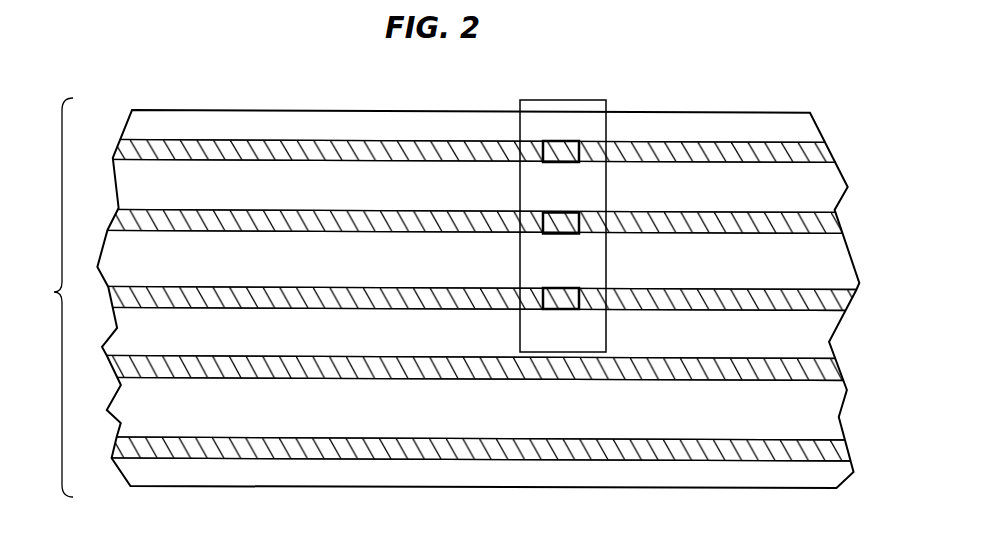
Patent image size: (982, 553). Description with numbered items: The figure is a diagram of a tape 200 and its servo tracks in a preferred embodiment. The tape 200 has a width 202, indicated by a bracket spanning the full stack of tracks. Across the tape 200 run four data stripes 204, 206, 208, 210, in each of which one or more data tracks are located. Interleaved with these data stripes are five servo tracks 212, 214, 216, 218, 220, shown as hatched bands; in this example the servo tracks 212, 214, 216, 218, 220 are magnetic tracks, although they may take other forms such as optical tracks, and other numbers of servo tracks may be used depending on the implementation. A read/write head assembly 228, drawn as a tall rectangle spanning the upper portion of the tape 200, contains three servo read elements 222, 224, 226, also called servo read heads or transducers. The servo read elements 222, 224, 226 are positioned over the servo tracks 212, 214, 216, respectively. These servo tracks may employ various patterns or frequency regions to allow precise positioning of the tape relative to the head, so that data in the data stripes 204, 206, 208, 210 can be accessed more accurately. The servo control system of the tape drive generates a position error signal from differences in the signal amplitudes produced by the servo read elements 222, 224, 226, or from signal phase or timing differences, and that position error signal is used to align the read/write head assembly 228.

The tape 200 is at (265, 88).
The width 202 is at (40, 297).
The data stripe 204 is at (309, 192).
The data stripe 206 is at (309, 267).
The data stripe 208 is at (309, 341).
The data stripe 210 is at (309, 416).
The servo track 212 is at (130, 152).
The servo track 214 is at (128, 223).
The servo track 216 is at (123, 294).
The servo track 218 is at (125, 364).
The servo track 220 is at (123, 447).
The servo read element 222 is at (550, 164).
The servo read element 224 is at (550, 236).
The servo read element 226 is at (550, 311).
The read/write head assembly 228 is at (606, 181).